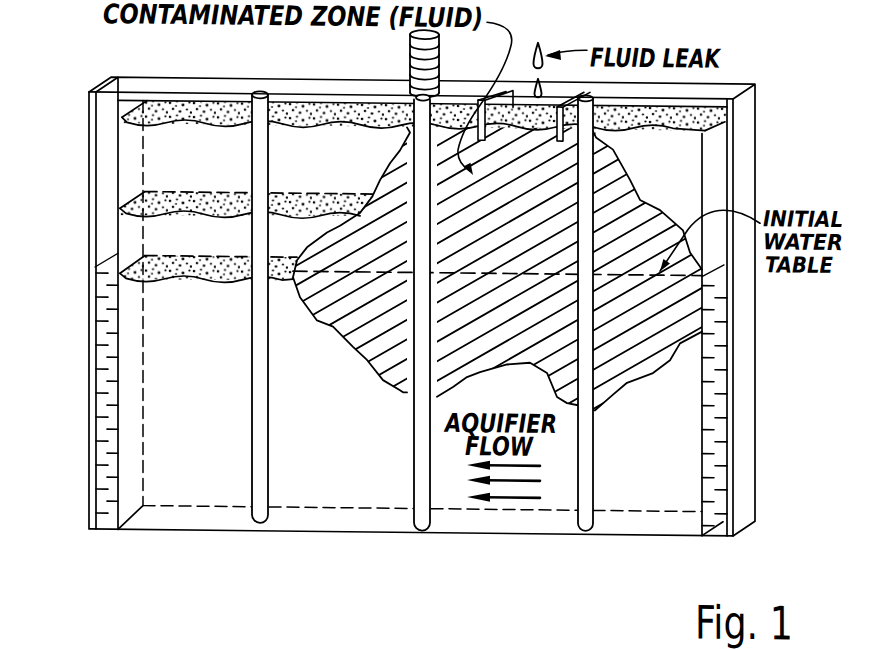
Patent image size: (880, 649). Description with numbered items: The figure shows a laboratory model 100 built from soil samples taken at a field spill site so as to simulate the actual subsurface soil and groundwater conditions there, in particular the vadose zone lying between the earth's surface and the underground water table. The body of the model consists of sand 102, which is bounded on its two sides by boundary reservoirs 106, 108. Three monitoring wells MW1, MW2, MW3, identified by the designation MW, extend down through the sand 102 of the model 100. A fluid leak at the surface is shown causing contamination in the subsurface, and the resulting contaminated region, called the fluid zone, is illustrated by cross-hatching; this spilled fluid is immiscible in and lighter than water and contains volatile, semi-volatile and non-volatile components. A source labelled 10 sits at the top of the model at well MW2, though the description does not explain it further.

The contaminant fluid source container 10 is at (410, 47).
The laboratory model 100 is at (533, 531).
The sand 102 is at (143, 133).
The boundary reservoir 106 is at (88, 427).
The boundary reservoir 108 is at (723, 444).
The monitoring well MW1 is at (593, 441).
The monitoring well MW2 is at (414, 435).
The monitoring well MW3 is at (252, 330).